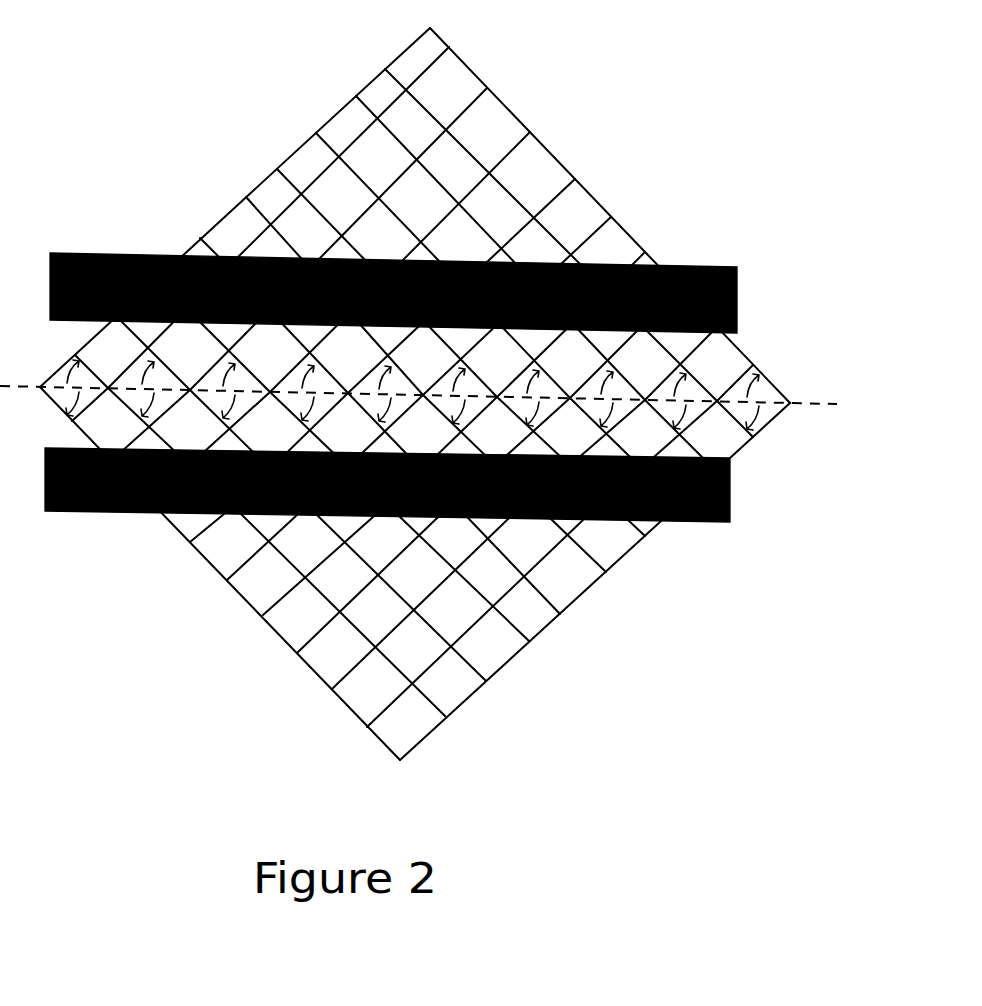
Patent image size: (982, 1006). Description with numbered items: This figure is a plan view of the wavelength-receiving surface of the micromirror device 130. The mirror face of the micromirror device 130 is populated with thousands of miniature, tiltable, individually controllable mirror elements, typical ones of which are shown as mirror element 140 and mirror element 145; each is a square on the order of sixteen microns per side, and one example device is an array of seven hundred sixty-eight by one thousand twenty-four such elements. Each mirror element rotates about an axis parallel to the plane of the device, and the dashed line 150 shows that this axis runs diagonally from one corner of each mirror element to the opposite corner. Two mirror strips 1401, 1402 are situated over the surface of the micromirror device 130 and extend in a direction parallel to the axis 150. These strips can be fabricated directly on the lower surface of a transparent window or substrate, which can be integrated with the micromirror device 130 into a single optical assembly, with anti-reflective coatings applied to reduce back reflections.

The micromirror device 130 is at (415, 410).
The mirror element 140 is at (492, 648).
The mirror strip 1401 is at (693, 267).
The mirror strip 1402 is at (710, 527).
The mirror element 145 is at (540, 620).
The axis 150 is at (798, 400).